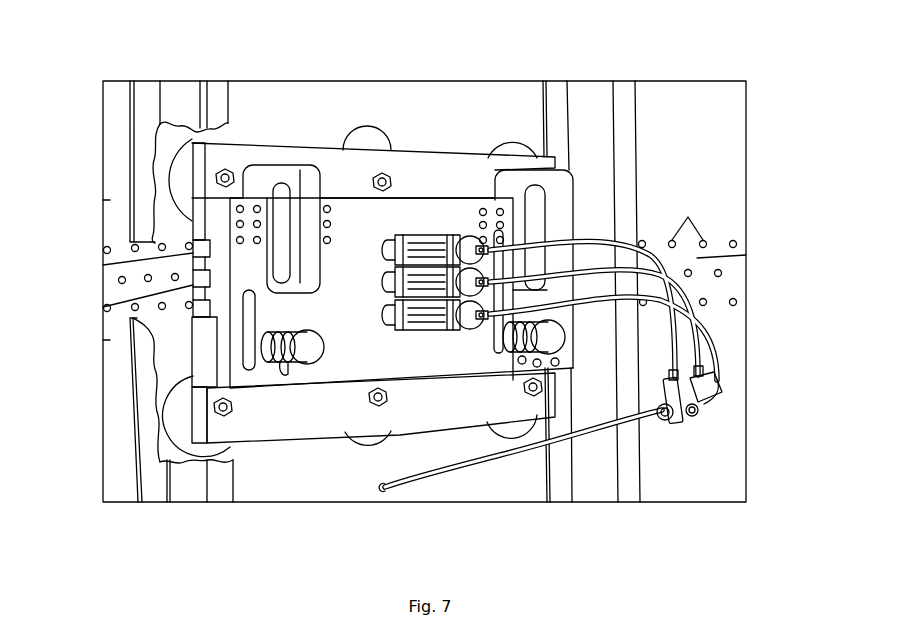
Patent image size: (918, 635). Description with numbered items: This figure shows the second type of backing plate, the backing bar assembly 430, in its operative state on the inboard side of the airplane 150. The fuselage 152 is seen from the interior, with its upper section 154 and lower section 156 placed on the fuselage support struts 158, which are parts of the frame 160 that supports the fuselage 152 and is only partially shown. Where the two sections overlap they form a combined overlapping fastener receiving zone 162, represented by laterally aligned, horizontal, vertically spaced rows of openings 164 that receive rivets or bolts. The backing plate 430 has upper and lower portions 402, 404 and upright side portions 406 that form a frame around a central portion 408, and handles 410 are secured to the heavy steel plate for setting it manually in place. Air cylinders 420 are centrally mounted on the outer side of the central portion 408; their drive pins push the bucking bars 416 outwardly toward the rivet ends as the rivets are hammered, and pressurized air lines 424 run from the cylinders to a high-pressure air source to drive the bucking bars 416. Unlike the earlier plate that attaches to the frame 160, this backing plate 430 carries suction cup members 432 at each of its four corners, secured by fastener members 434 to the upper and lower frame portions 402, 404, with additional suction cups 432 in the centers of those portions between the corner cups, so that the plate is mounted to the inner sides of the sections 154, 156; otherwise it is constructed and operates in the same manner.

The airplane 150 is at (422, 79).
The fuselage 152 is at (747, 116).
The upper section 154 is at (108, 200).
The lower section 156 is at (108, 340).
The fuselage support struts 158 is at (163, 88).
The frame 160 is at (600, 503).
The overlapping fastener receiving zone 162 is at (108, 233).
The openings 164 is at (688, 217).
The upper portion 402 is at (360, 186).
The lower portion 404 is at (365, 416).
The upright side portions 406 is at (205, 362).
The central portion 408 is at (445, 361).
The handles 410 is at (495, 186).
The bucking bars 416 is at (110, 266).
The air cylinders 420 is at (386, 246).
The pressurized air lines 424 is at (680, 340).
The backing plate type 2 430 is at (382, 238).
The suction cup members 432 is at (208, 134).
The fastener members 434 is at (392, 180).